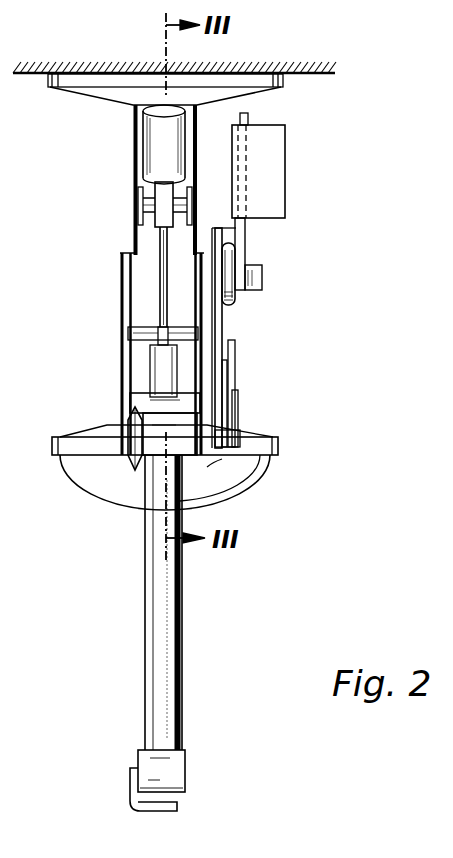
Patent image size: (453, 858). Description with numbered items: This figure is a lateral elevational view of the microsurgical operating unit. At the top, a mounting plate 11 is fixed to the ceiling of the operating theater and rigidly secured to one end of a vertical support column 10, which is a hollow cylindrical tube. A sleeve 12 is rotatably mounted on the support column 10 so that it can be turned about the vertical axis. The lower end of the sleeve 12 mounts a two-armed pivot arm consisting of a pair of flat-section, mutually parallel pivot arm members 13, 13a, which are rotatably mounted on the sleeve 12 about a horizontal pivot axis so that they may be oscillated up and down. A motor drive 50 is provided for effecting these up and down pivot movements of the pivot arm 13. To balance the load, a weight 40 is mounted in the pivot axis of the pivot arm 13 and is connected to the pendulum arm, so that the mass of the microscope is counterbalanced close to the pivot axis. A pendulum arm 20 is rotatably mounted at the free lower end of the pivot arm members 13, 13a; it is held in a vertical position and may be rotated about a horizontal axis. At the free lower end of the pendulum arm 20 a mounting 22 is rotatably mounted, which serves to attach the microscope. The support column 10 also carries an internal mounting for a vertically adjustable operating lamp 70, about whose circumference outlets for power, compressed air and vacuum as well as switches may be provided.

The mounting plate 11 is at (95, 85).
The motor drive 50 is at (146, 147).
The weight 40 is at (272, 174).
The sleeve 12 is at (145, 243).
The vertical support column 10 is at (158, 364).
The pivot arm 13 is at (122, 346).
The pivot arm member 13a is at (205, 349).
The operating lamp 70 is at (112, 490).
The pendulum arm 20 is at (152, 663).
The mounting 22 is at (140, 800).